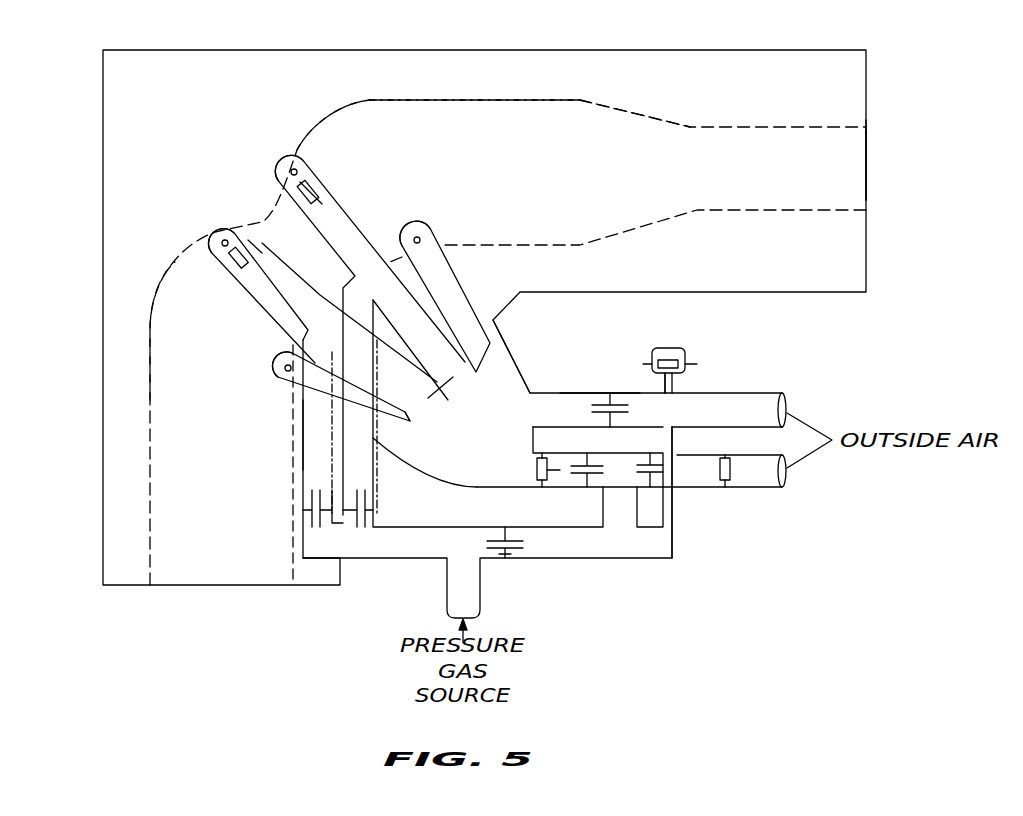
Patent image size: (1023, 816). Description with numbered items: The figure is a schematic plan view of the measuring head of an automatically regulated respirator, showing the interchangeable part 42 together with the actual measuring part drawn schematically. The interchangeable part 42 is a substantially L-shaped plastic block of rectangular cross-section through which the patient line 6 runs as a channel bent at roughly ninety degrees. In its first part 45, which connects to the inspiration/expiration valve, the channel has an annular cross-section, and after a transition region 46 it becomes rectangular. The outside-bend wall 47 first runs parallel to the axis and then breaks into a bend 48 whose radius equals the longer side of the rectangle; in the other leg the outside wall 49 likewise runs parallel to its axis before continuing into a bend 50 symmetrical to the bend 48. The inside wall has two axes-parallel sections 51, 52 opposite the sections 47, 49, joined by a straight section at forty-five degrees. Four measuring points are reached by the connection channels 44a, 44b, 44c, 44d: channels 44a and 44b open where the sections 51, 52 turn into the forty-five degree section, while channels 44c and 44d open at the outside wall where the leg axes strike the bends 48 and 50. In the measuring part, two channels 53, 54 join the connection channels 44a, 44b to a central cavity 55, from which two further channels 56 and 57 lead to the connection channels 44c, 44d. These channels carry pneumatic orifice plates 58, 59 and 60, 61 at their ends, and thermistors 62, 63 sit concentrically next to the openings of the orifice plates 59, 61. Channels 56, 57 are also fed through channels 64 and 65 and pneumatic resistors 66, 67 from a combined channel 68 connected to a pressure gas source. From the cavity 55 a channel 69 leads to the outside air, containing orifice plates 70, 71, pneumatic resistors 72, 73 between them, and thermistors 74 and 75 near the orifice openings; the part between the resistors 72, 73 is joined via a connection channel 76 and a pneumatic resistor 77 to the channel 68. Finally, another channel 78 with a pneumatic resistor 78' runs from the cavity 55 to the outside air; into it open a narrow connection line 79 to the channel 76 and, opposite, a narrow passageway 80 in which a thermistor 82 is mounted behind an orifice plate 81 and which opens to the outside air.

The interchangeable part 42 is at (240, 58).
The first part of the channel 45 is at (866, 152).
The transition region 46 is at (650, 118).
The outside-bend wall 47 is at (470, 100).
The bend 48 is at (352, 108).
The outside wall 49 is at (262, 222).
The bend 50 is at (160, 298).
The axes-parallel section of the inside wall 51 is at (540, 246).
The axes-parallel section of the inside wall 52 is at (290, 535).
The channel 53 is at (463, 293).
The channel 54 is at (395, 440).
The central cavity 55 is at (505, 360).
The channel 56 is at (348, 228).
The channel 57 is at (262, 295).
The pneumatic orifice plate 58 is at (456, 370).
The pneumatic orifice plate 59 is at (325, 185).
The pneumatic orifice plate 60 is at (417, 420).
The pneumatic orifice plate 61 is at (272, 268).
The thermistor 62 is at (280, 188).
The thermistor 63 is at (226, 266).
The channel 64 is at (353, 447).
The channel 65 is at (310, 432).
The pneumatic resistor 66 is at (375, 510).
The pneumatic resistor 67 is at (303, 510).
The combined channel 68 is at (385, 560).
The channel 69 is at (668, 496).
The pneumatic orifice plate 70 is at (550, 484).
The pneumatic orifice plate 71 is at (720, 488).
The pneumatic resistor 72 is at (598, 472).
The pneumatic resistor 73 is at (663, 467).
The thermistor 74 is at (537, 470).
The thermistor 75 is at (735, 478).
The connection channel 76 is at (645, 552).
The pneumatic resistor 77 is at (525, 560).
The channel 78 is at (659, 396).
The pneumatic resistor 78' is at (600, 371).
The connection line 79 is at (673, 440).
The passageway 80 is at (684, 383).
The orifice plate 81 is at (662, 386).
The thermistor 82 is at (672, 347).
The patient line 6 is at (764, 130).
The connection channel 44a is at (420, 240).
The connection channel 44b is at (282, 375).
The connection channel 44c is at (294, 165).
The connection channel 44d is at (218, 238).